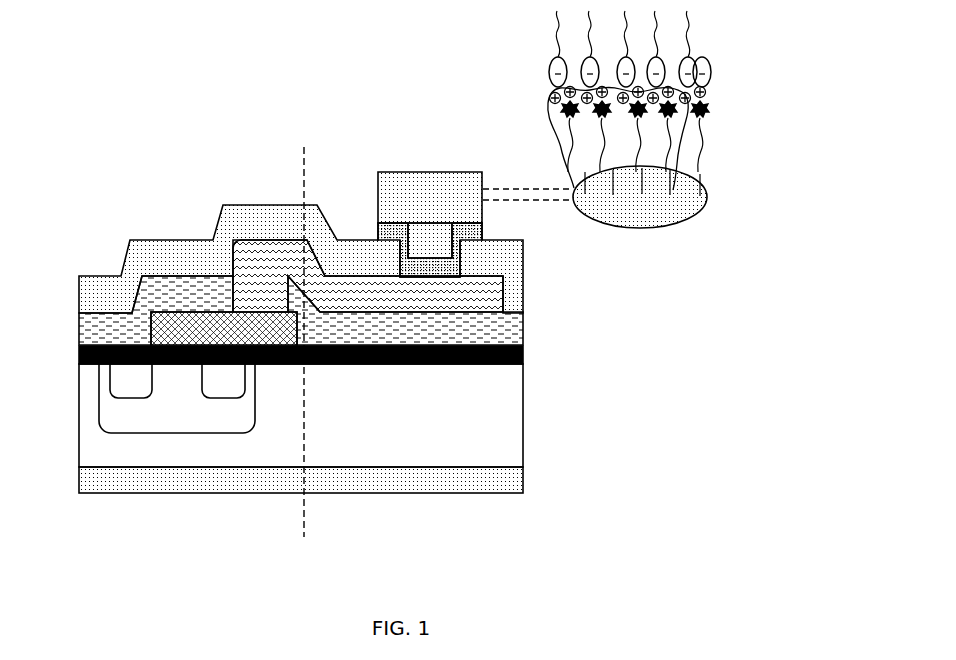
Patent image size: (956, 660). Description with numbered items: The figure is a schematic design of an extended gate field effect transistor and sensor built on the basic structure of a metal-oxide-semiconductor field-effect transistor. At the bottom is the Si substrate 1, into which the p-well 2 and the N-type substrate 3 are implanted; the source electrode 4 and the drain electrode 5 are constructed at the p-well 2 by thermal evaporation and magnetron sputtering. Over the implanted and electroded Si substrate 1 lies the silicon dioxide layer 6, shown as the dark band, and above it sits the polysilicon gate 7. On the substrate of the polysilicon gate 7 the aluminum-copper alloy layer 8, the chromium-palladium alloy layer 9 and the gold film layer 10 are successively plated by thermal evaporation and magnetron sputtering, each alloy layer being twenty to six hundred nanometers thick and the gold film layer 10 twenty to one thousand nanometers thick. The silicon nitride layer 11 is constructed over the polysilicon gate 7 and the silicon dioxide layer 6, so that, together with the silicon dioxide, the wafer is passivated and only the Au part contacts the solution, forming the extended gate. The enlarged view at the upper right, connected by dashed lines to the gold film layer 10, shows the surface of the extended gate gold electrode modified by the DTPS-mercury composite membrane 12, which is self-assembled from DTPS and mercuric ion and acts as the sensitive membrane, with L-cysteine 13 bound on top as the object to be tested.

The Si substrate 1 is at (91, 481).
The p-well 2 is at (177, 407).
The N-type substrate 3 is at (426, 407).
The source electrode 4 is at (134, 389).
The drain electrode 5 is at (224, 389).
The silicon dioxide layer 6 is at (524, 355).
The polysilicon gate 7 is at (188, 330).
The aluminum-copper alloy layer 8 is at (249, 257).
The chromium-palladium alloy layer 9 is at (389, 223).
The gold film layer 10 is at (468, 207).
The silicon nitride layer 11 is at (510, 328).
The 3,3'-dithiobis (1-propanesulfonate)-mercury composite membrane 12 is at (712, 117).
The L-cysteine 13 is at (713, 59).